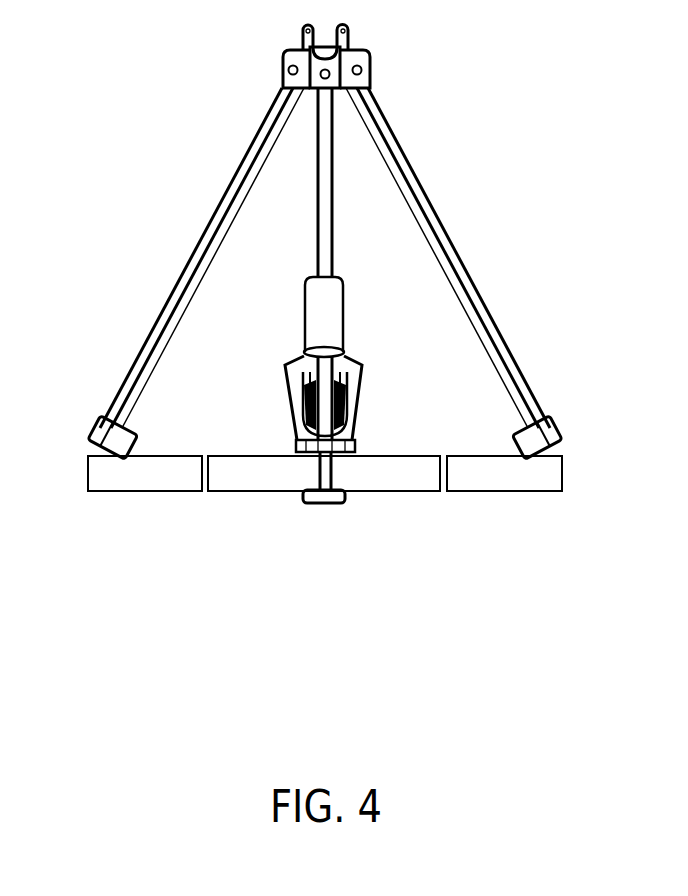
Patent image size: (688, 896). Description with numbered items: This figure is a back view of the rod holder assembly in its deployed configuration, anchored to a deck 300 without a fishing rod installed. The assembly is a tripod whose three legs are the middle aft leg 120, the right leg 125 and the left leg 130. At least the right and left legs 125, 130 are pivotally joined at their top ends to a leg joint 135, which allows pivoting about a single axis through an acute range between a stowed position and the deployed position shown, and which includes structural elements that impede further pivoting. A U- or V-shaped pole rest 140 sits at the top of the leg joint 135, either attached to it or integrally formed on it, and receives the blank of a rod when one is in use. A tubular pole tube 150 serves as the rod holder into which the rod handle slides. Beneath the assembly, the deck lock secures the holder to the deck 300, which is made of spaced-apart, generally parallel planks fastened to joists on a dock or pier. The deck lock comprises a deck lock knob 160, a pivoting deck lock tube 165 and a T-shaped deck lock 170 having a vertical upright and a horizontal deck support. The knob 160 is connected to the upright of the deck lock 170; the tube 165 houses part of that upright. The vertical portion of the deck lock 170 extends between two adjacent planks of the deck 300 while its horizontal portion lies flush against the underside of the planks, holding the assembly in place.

The aft leg 120 is at (320, 180).
The right leg 125 is at (460, 265).
The left leg 130 is at (178, 301).
The leg joint 135 is at (372, 61).
The pole rest 140 is at (306, 31).
The pole tube 150 is at (332, 312).
The deck lock knob 160 is at (310, 350).
The deck lock tube 165 is at (305, 405).
The T-shaped deck lock 170 is at (337, 504).
The deck 300 is at (285, 493).